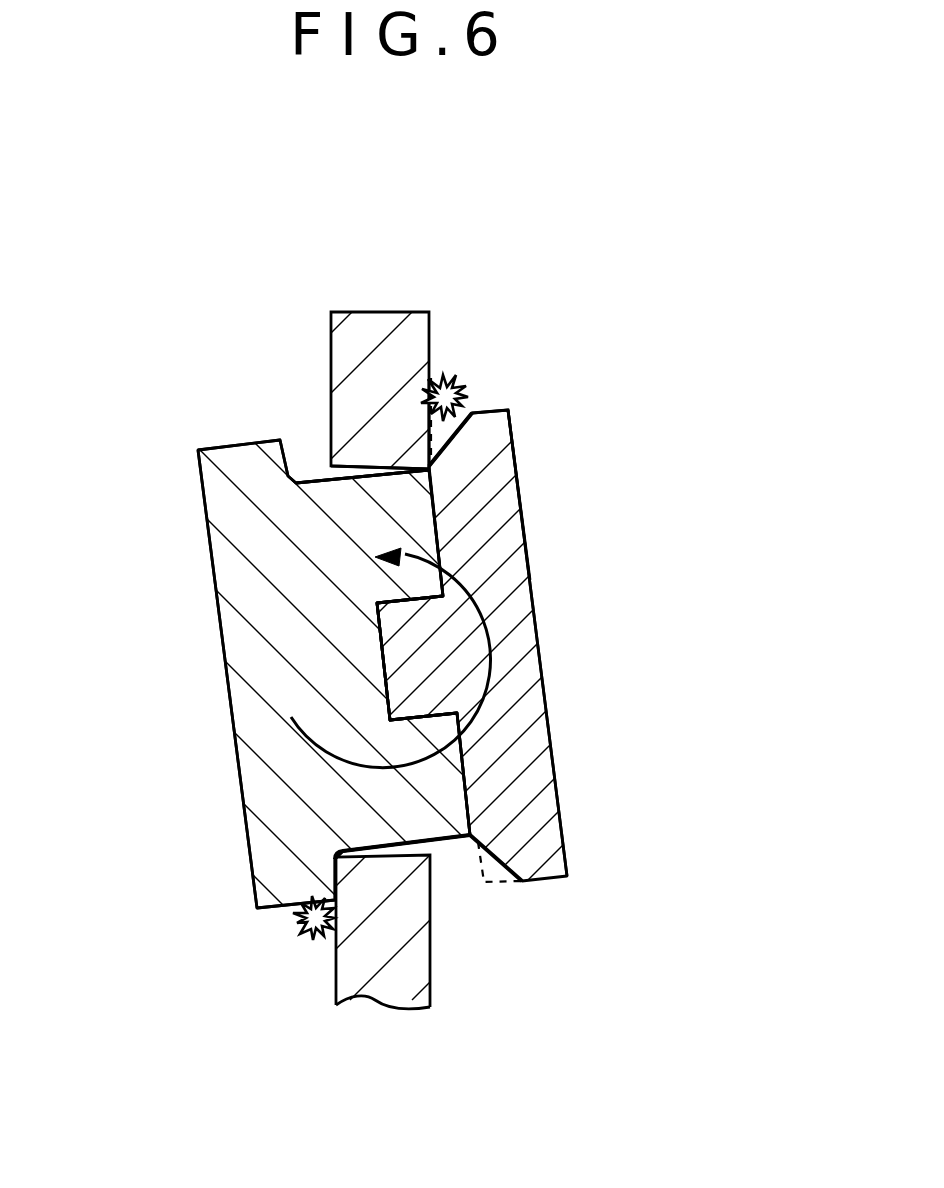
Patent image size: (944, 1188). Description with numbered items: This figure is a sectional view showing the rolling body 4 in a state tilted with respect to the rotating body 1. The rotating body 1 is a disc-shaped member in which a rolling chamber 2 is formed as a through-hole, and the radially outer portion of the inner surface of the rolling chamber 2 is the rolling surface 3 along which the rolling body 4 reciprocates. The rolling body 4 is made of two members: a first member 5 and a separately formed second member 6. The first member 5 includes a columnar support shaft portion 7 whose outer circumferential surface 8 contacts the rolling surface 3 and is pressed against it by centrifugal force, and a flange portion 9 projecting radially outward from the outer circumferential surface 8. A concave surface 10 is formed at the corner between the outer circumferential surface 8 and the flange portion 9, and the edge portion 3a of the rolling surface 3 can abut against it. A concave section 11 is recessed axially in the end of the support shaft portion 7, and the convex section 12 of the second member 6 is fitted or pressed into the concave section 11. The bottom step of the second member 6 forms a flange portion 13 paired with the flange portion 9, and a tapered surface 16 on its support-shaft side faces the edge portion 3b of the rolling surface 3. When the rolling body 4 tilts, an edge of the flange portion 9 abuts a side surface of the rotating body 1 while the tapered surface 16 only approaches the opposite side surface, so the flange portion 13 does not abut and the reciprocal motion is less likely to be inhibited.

The rotating body 1 is at (388, 326).
The rolling chamber 2 is at (397, 858).
The rolling surface 3 is at (366, 478).
The edge portion of the rolling surface 3a is at (366, 480).
The edge portion of the rolling surface 3b is at (420, 468).
The rolling body 4 is at (576, 532).
The first member 5 is at (85, 752).
The second member 6 is at (529, 573).
The support shaft portion 7 is at (347, 682).
The outer circumferential surface 8 is at (443, 843).
The flange portion 9 is at (282, 868).
The concave surface 10 is at (294, 482).
The concave section 11 is at (404, 602).
The convex section 12 is at (405, 657).
The flange portion 13 is at (497, 445).
The tapered surface 16 is at (447, 440).